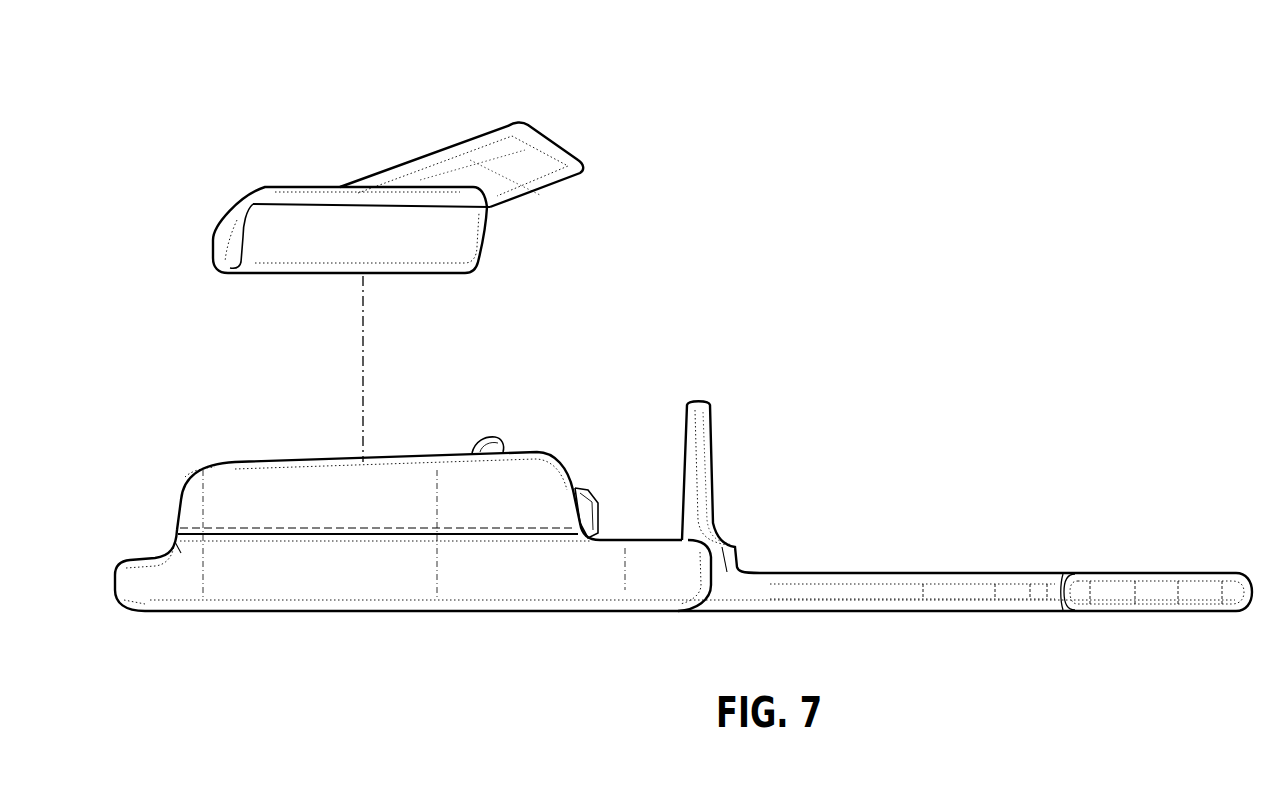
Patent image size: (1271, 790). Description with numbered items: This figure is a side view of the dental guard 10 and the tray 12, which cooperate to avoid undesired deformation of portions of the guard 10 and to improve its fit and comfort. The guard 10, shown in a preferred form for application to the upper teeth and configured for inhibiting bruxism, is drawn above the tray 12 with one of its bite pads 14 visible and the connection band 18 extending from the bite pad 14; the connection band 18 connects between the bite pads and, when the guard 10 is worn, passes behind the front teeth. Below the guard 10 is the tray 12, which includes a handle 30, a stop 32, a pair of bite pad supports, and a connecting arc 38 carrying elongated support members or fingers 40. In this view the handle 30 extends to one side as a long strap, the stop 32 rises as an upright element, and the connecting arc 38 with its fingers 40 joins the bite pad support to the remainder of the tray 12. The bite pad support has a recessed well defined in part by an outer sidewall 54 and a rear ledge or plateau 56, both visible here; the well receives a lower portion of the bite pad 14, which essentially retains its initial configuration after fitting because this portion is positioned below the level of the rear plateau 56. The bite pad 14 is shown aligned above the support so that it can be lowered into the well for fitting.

The dental guard 10 is at (337, 116).
The tray 12 is at (908, 464).
The bite pad 14 is at (278, 259).
The connection band 18 is at (558, 144).
The handle 30 is at (1010, 571).
The stop 32 is at (713, 447).
The connecting arc 38 is at (653, 578).
The fingers 40 is at (595, 490).
The outer sidewall 54 is at (402, 502).
The rear plateau 56 is at (130, 558).